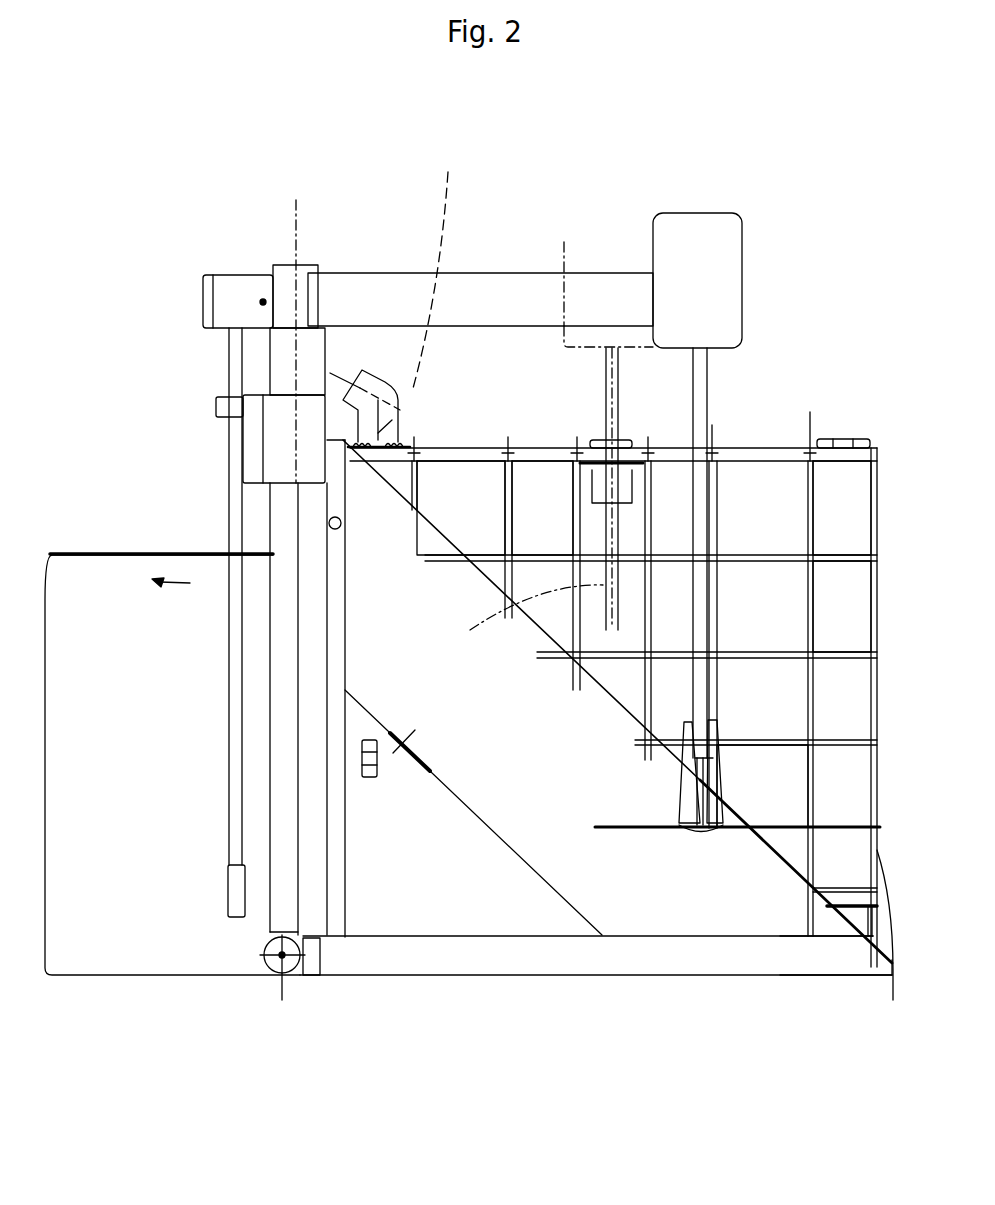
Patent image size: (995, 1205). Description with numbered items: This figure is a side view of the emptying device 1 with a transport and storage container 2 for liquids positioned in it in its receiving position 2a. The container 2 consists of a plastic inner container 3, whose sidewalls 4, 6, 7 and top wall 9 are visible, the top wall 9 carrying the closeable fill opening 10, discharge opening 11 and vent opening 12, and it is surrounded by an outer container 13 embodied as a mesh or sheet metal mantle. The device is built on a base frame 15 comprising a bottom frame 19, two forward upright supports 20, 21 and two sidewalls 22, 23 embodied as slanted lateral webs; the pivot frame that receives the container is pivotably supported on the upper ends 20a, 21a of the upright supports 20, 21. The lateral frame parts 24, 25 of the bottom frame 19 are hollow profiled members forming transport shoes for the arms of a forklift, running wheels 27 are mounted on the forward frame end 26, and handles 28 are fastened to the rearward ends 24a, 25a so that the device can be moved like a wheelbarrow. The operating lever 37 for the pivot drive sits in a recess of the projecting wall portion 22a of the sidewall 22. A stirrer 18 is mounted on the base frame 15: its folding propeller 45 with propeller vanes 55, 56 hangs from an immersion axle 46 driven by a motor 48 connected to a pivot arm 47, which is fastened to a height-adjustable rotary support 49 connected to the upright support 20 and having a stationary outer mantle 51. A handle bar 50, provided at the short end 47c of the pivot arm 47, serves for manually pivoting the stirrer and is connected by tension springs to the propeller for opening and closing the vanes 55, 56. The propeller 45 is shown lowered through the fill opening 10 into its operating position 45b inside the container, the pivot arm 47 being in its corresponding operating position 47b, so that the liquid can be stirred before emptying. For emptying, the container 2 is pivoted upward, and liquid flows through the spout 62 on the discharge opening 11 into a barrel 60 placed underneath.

The emptying device 1 is at (480, 234).
The transport and storage container 2 is at (743, 436).
The receiving position 2a is at (840, 578).
The inner container 3 is at (762, 797).
The sidewall 4 is at (461, 465).
The sidewall 6 is at (468, 518).
The sidewall 7 is at (877, 610).
The top wall 9 is at (540, 462).
The fill opening 10 is at (625, 447).
The discharge opening 11 is at (433, 267).
The vent opening 12 is at (833, 437).
The outer container 13 is at (893, 970).
The base frame 15 is at (596, 1009).
The stirrer 18 is at (576, 247).
The bottom frame 19 is at (615, 965).
The upright support 20 is at (249, 782).
The upright support 21 is at (335, 745).
The upper end 20a is at (210, 471).
The upper end 21a is at (287, 603).
The sidewall 22 is at (609, 761).
The sidewall 23 is at (498, 767).
The projecting wall portion 22a is at (465, 897).
The lateral frame part 24 is at (596, 1009).
The lateral frame part 25 is at (596, 1009).
The rearward end 24a is at (836, 1009).
The rearward end 25a is at (823, 960).
The forward frame end 26 is at (320, 967).
The running wheel 27 is at (278, 963).
The handle 28 is at (847, 917).
The operating lever 37 is at (400, 747).
The folding propeller 45 is at (700, 832).
The operating position 45b is at (519, 621).
The immersion axle 46 is at (697, 577).
The pivot arm 47 is at (480, 234).
The operating position 47b is at (513, 297).
The short end 47c is at (235, 288).
The motor 48 is at (630, 450).
The rotary support 49 is at (282, 355).
The handle bar 50 is at (156, 705).
The stationary outer mantle 51 is at (233, 660).
The propeller vane 55 is at (717, 954).
The propeller vane 56 is at (772, 830).
The barrel 60 is at (140, 870).
The spout 62 is at (370, 382).